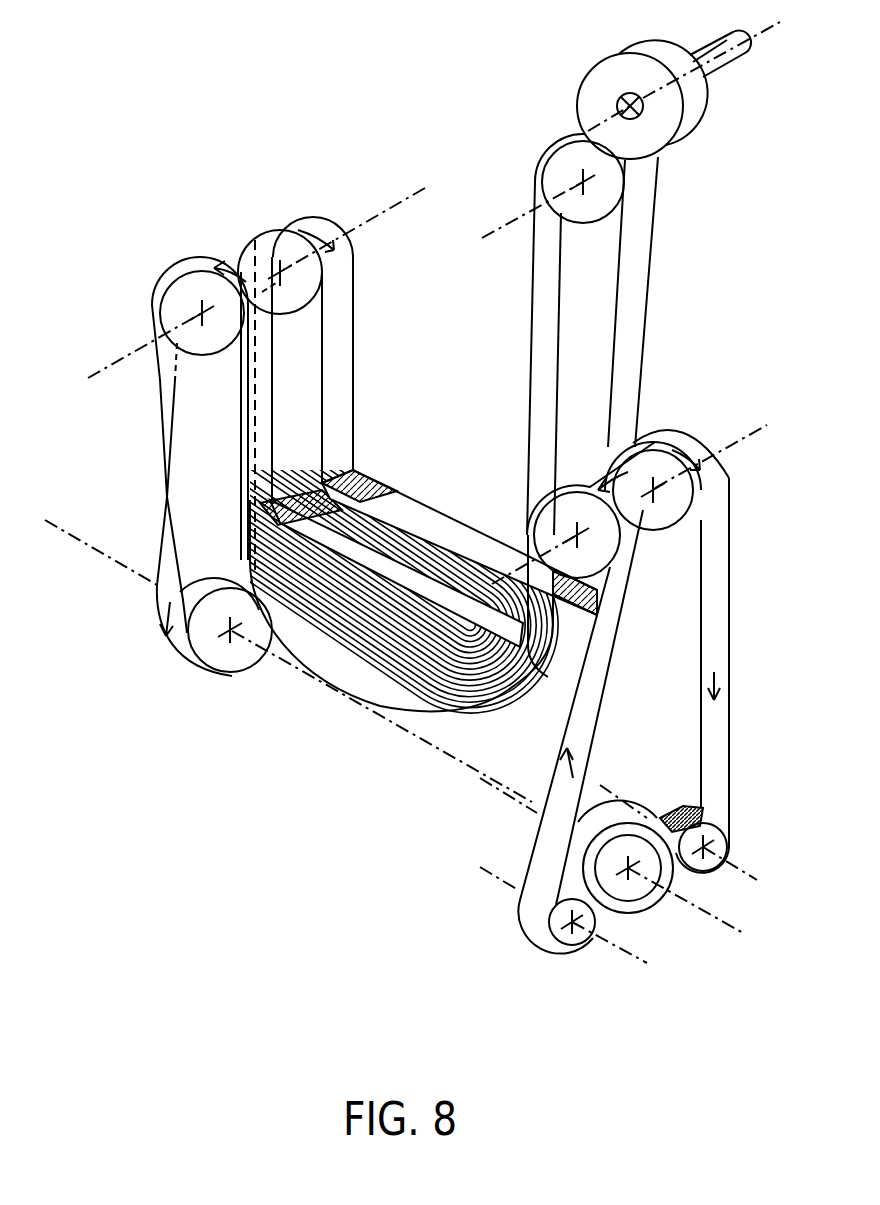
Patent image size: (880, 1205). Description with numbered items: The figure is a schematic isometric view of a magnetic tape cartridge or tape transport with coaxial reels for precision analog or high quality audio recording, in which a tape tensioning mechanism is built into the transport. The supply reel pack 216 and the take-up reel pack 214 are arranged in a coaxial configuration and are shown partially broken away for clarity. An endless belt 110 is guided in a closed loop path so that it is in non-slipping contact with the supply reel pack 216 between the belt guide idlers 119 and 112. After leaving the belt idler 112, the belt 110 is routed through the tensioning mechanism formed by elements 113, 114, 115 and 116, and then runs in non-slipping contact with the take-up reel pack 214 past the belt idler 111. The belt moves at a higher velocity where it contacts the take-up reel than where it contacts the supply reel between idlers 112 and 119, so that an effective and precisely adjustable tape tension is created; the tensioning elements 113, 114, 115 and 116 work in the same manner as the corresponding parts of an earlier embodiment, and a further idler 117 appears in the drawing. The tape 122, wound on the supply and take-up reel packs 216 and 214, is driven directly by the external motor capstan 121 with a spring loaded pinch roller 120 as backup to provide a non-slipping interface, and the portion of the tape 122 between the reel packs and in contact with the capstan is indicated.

The endless belt 110 is at (356, 386).
The belt idler 111 is at (540, 520).
The belt guide idler 112 is at (655, 473).
The tensioning mechanism element 113 is at (180, 294).
The tensioning mechanism element 114 is at (645, 865).
The tensioning mechanism element 115 is at (640, 893).
The tensioning mechanism element 116 is at (561, 933).
The pulley 117 is at (218, 655).
The belt guide idler 119 is at (276, 248).
The spring loaded pinch roller 120 is at (602, 192).
The external motor capstan 121 is at (658, 53).
The tape 122 is at (645, 334).
The take-up reel pack 214 is at (357, 665).
The supply reel pack 216 is at (402, 512).